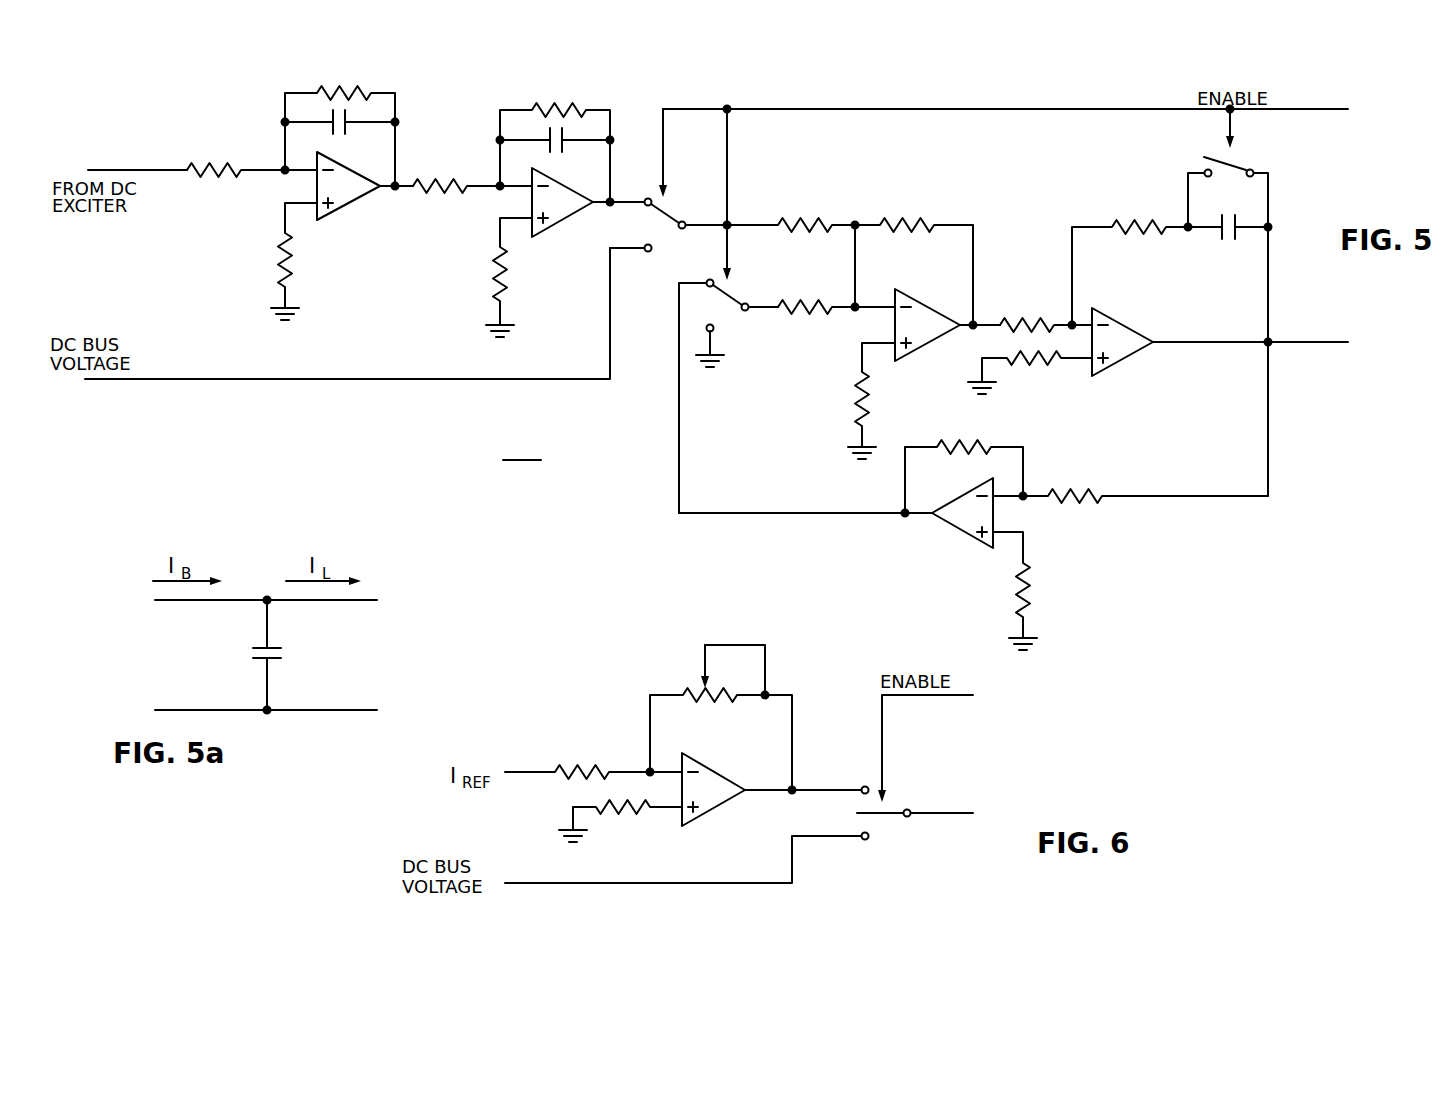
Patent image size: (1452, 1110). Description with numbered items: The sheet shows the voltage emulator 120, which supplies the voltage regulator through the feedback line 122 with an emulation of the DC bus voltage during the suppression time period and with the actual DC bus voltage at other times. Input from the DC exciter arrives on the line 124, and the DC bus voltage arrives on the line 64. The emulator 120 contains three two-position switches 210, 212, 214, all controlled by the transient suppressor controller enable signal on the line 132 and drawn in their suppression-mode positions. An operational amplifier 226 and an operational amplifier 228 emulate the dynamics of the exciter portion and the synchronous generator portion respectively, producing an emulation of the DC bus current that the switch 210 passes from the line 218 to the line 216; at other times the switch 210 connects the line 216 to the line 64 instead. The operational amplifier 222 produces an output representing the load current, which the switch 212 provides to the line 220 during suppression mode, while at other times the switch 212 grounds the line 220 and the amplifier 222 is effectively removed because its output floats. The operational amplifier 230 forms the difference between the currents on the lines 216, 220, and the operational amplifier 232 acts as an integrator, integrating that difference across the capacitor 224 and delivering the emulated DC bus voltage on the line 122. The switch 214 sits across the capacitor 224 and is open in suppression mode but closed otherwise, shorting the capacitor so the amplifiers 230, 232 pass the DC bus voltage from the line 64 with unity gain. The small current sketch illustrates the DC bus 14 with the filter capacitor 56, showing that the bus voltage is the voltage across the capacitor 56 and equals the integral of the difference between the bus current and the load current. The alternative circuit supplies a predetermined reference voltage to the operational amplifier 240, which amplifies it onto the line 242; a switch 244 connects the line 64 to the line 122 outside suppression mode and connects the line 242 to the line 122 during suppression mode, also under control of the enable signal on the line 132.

In FIG. 5, the voltage emulator 120 is at (523, 447).
In FIG. 5, the input line from DC exciter 124 is at (128, 170).
In FIG. 5, the line 132 is at (940, 108).
In FIG. 6, the line 132 is at (880, 697).
In FIG. 5, the line 64 is at (169, 382).
In FIG. 6, the line 64 is at (813, 837).
In FIG. 5, the operational amplifier 226 is at (345, 207).
In FIG. 5, the operational amplifier 228 is at (557, 222).
In FIG. 5, the line 218 is at (625, 200).
In FIG. 5, the two-position switch 210 is at (667, 217).
In FIG. 5, the two-position switch 212 is at (728, 309).
In FIG. 5, the two-position switch 214 is at (1235, 167).
In FIG. 5, the line 216 is at (752, 225).
In FIG. 5, the line 220 is at (758, 305).
In FIG. 5, the operational amplifier 230 is at (927, 345).
In FIG. 5, the operational amplifier 232 is at (1120, 363).
In FIG. 5, the capacitor 224 is at (1237, 238).
In FIG. 5, the operational amplifier 222 is at (960, 533).
In FIG. 5, the feedback line 122 is at (1297, 344).
In FIG. 6, the feedback line 122 is at (947, 812).
In FIG. 5a, the DC bus 14 is at (349, 601).
In FIG. 5a, the capacitor 56 is at (263, 660).
In FIG. 6, the operational amplifier 240 is at (720, 807).
In FIG. 6, the line 242 is at (827, 787).
In FIG. 6, the switch 244 is at (877, 815).